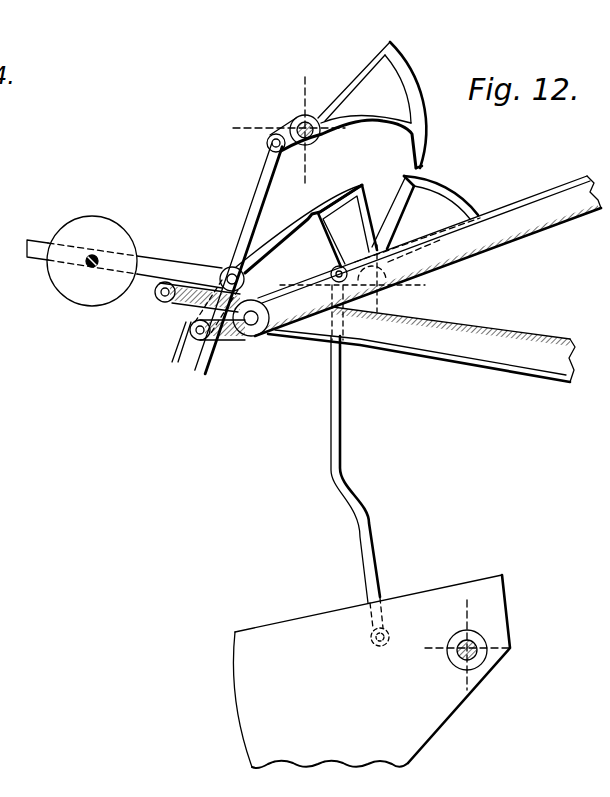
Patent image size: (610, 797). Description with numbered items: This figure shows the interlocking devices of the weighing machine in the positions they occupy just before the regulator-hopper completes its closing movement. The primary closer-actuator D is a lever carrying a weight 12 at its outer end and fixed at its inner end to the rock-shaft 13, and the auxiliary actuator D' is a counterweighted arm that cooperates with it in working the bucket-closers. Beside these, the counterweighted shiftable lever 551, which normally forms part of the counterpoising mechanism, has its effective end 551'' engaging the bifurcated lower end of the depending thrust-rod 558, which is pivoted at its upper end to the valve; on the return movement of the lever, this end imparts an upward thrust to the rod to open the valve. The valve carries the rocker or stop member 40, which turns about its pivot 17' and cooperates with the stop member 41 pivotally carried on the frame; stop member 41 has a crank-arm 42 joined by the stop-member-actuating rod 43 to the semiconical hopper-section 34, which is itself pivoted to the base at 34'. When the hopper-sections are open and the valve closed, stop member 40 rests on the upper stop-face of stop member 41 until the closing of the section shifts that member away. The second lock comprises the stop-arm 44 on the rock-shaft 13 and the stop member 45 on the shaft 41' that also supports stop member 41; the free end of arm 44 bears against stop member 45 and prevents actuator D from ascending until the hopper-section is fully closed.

The weight 12 is at (80, 287).
The rock-shaft 13 is at (230, 268).
The pivot pin of sector 17' is at (289, 131).
The semiconical hopper-section 34 is at (371, 671).
The pivot of hopper-section 34' is at (461, 645).
The stop member 40 is at (413, 85).
The stop member 41 is at (425, 201).
The shaft 41' is at (417, 238).
The crank-arm 42 is at (335, 271).
The stop-member-actuating rod 43 is at (338, 457).
The stop-arm 44 is at (277, 240).
The stop member 45 is at (345, 188).
The shiftable lever 551 is at (428, 256).
The effective end of shiftable lever 551'' is at (226, 327).
The thrust-rod 558 is at (262, 177).
The primary actuator D is at (124, 264).
The auxiliary actuator D' is at (359, 332).